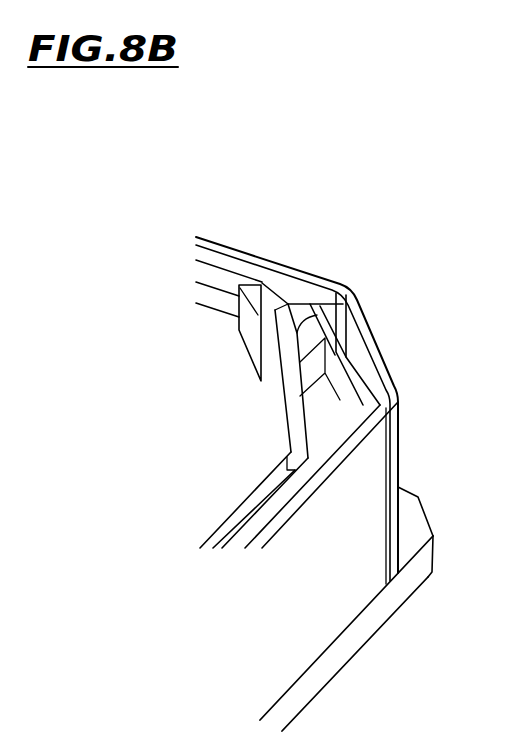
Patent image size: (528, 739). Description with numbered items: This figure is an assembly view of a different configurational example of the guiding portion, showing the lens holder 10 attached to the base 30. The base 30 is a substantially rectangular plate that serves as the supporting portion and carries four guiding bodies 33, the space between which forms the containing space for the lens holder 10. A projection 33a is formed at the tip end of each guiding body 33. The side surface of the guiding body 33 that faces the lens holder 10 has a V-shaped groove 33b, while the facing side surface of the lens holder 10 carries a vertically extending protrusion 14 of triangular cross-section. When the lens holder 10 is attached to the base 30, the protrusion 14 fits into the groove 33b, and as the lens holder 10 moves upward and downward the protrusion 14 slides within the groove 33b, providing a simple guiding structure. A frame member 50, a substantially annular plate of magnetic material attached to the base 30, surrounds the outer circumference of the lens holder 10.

The lens holder 10 is at (194, 317).
The protrusion 14 is at (268, 388).
The base 30 is at (362, 622).
The guiding body 33 is at (333, 396).
The projection 33a is at (345, 302).
The V-shaped groove 33b is at (303, 286).
The frame member 50 is at (400, 470).